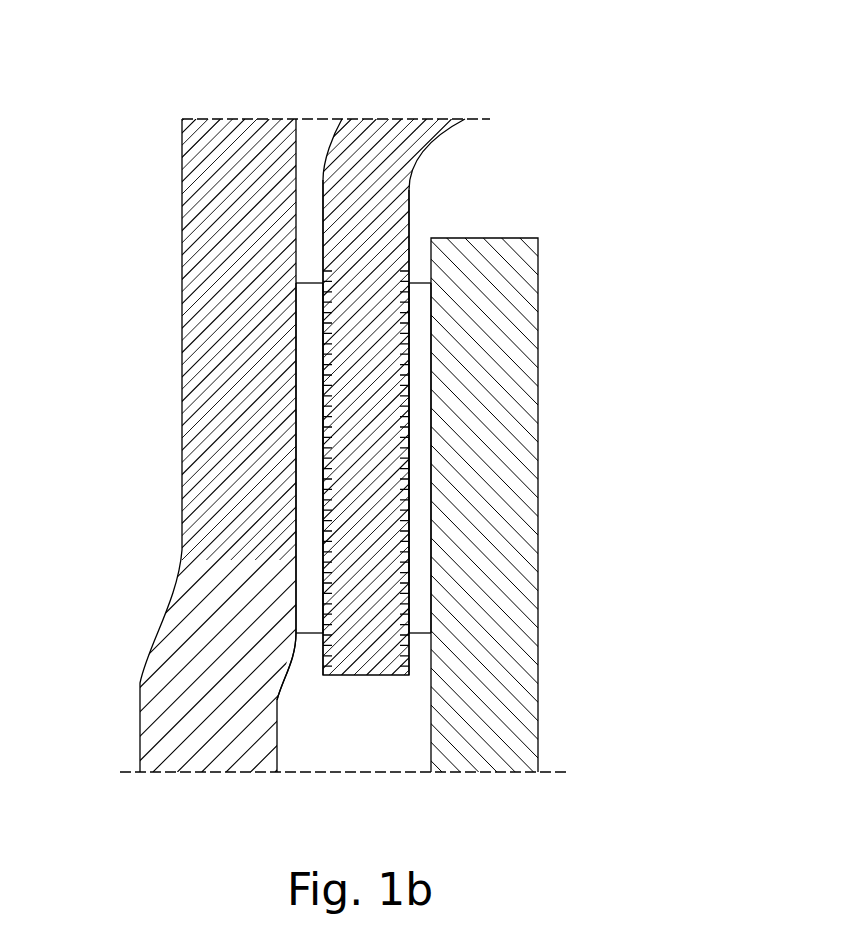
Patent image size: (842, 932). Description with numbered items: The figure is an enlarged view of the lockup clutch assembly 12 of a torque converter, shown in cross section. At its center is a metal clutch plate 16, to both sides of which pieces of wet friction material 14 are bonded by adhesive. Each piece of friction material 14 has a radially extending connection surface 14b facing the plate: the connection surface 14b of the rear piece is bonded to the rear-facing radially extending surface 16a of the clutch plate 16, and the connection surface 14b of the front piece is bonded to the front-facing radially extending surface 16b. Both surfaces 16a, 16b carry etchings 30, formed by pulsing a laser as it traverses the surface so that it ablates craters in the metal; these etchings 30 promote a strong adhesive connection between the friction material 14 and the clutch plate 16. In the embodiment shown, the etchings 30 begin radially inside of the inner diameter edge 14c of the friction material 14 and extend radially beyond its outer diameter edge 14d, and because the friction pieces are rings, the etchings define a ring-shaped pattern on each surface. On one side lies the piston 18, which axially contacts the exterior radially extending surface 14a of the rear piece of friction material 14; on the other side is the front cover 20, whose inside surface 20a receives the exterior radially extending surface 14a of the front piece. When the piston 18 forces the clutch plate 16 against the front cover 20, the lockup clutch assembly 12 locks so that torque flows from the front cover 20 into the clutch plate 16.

The lockup clutch assembly 12 is at (502, 93).
The wet friction material 14 is at (313, 374).
The exterior radially extending surface 14a is at (295, 539).
The radially extending connection surface 14b is at (330, 392).
The inner diameter edge 14c is at (291, 657).
The outer diameter edge 14d is at (306, 283).
The clutch plate 16 is at (384, 135).
The rear-facing radially extending surface 16a is at (412, 365).
The front-facing radially extending surface 16b is at (328, 468).
The piston 18 is at (522, 288).
The front cover 20 is at (210, 330).
The inside surface 20a is at (297, 597).
The etchings 30 is at (380, 555).